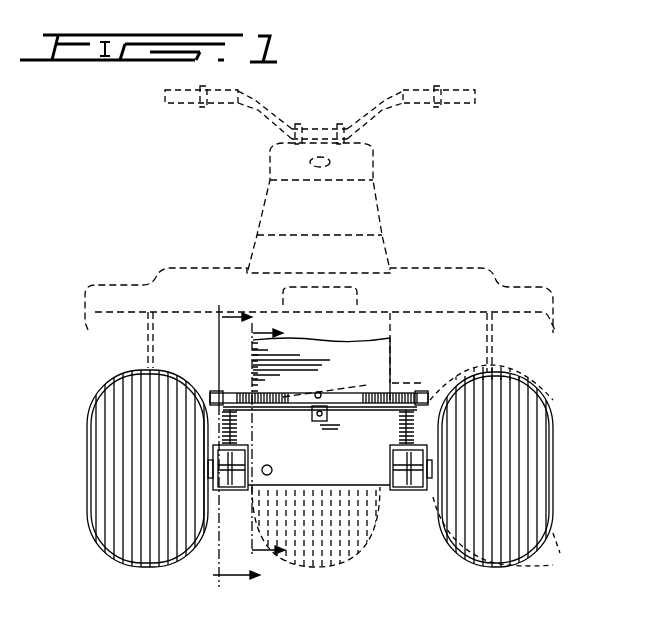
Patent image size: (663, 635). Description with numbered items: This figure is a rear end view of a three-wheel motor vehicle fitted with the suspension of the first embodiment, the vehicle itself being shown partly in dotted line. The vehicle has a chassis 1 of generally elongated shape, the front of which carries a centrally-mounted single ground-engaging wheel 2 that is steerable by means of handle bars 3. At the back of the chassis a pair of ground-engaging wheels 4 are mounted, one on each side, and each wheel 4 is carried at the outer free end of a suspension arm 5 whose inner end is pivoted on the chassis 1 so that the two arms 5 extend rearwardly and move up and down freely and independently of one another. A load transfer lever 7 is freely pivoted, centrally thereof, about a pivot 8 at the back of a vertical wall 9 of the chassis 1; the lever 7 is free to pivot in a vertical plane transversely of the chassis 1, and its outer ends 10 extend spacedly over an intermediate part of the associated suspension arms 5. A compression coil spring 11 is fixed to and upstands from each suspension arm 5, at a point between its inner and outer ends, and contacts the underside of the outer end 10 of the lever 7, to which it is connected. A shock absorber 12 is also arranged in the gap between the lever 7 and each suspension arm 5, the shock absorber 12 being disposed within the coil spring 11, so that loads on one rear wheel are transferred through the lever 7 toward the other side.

The chassis 1 is at (398, 336).
The ground-engaging wheel 2 is at (355, 572).
The handle bars 3 is at (447, 102).
The ground-engaging wheels 4 is at (583, 482).
The suspension arm 5 is at (412, 492).
The load transfer lever 7 is at (357, 392).
The pivot 8 is at (321, 392).
The vertical wall 9 is at (357, 472).
The outer ends 10 is at (223, 397).
The compression coil spring 11 is at (240, 423).
The shock absorber 12 is at (240, 428).